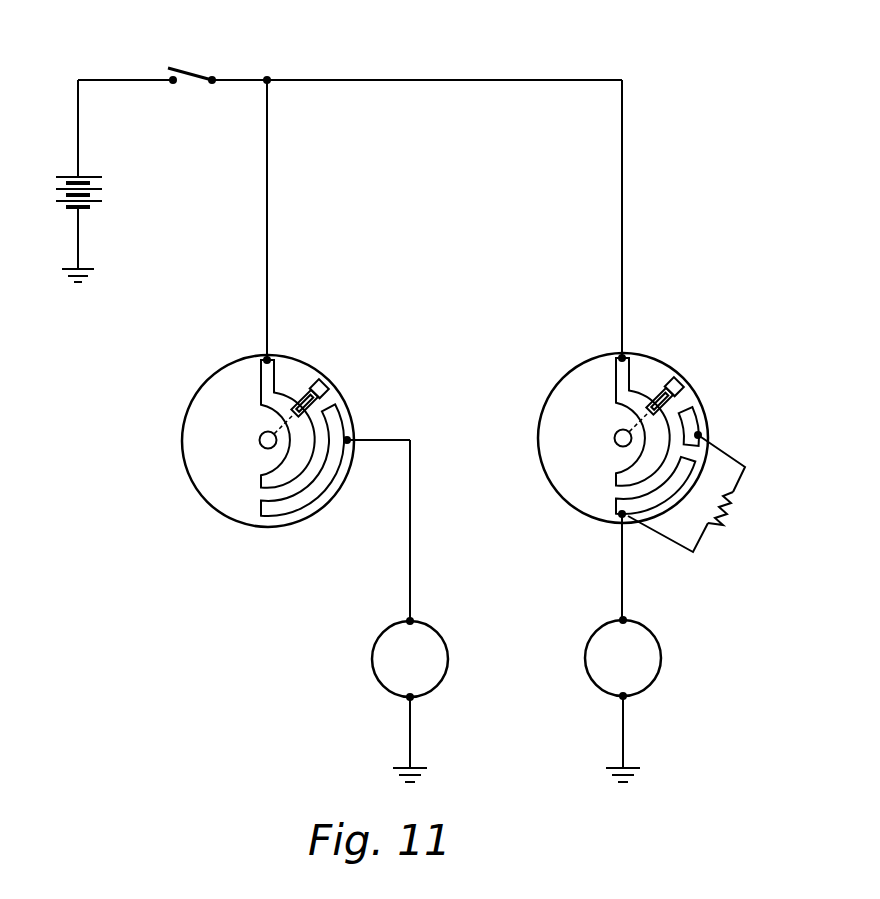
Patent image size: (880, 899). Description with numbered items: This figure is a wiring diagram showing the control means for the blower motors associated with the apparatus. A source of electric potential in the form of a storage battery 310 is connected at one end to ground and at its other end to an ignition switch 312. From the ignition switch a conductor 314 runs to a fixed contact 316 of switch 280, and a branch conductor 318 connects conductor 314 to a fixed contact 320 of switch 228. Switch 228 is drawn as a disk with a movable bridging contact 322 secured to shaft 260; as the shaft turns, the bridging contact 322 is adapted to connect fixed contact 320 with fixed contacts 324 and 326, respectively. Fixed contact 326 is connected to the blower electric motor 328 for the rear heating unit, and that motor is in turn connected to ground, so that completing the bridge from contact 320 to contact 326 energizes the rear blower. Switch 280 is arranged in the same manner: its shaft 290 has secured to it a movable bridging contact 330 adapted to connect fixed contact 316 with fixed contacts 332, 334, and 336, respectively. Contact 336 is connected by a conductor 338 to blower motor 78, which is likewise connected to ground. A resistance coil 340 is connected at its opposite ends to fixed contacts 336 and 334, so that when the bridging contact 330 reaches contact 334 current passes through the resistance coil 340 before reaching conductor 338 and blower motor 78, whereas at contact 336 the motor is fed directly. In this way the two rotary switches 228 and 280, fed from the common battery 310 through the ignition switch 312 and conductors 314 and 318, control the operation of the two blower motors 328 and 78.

The storage battery 310 is at (90, 177).
The ignition switch 312 is at (183, 63).
The conductor 314 is at (427, 80).
The branch conductor 318 is at (267, 218).
The switch 228 is at (217, 492).
The shaft 260 is at (260, 437).
The fixed contact 320 is at (265, 383).
The movable bridging contact 322 is at (333, 382).
The fixed contact 324 is at (326, 390).
The fixed contact 326 is at (273, 512).
The blower electric motor 328 is at (392, 677).
The switch 280 is at (578, 472).
The shaft 290 is at (613, 433).
The fixed contact 316 is at (620, 383).
The movable bridging contact 330 is at (685, 373).
The fixed contact 332 is at (682, 385).
The fixed contact 334 is at (693, 423).
The fixed contact 336 is at (618, 512).
The conductor 338 is at (628, 583).
The resistance coil 340 is at (722, 513).
The blower motor 78 is at (658, 665).